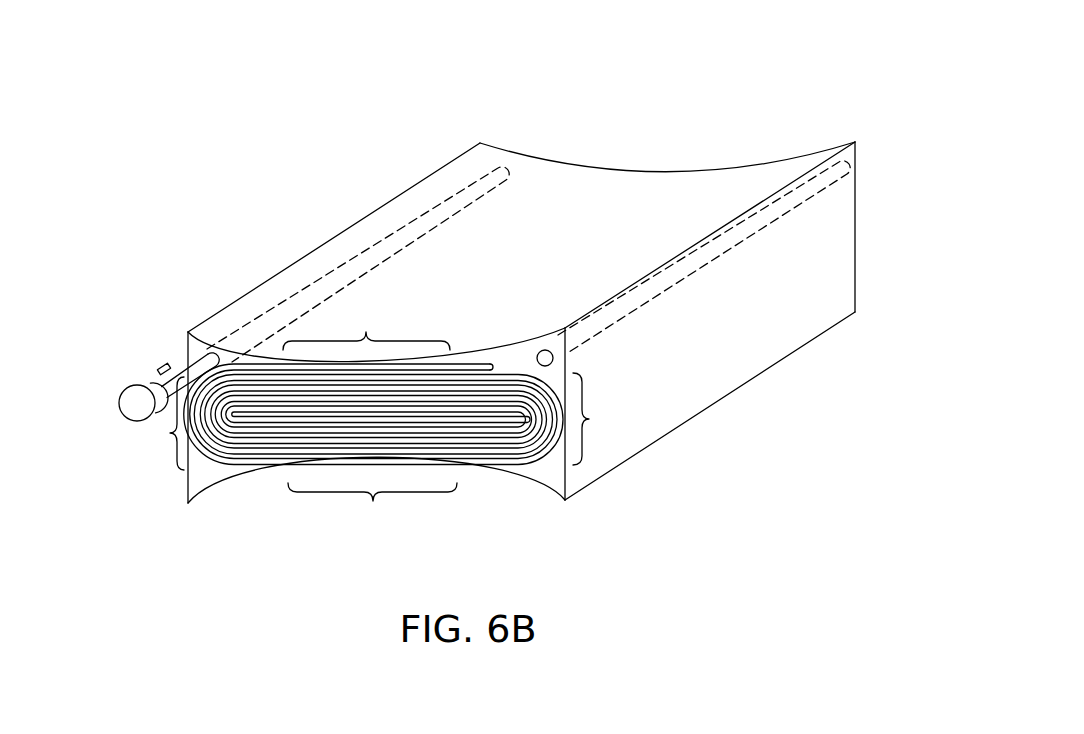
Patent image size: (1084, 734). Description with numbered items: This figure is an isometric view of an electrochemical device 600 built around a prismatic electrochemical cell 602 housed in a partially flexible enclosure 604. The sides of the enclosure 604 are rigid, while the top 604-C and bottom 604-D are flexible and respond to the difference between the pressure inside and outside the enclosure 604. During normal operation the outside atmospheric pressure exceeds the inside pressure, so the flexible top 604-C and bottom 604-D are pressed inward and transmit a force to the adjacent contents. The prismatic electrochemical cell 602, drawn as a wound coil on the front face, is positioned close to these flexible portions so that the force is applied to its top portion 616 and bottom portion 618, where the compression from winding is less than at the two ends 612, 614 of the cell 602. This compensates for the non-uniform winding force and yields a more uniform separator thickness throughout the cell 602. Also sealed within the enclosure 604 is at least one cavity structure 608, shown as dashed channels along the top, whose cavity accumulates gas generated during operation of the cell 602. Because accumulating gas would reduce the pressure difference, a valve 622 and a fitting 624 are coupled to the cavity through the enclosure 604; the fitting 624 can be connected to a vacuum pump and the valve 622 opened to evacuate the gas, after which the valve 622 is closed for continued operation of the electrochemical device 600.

The electrochemical device 600 is at (765, 85).
The prismatic electrochemical cell 602 is at (259, 474).
The enclosure 604 is at (857, 250).
The top of enclosure 604-C is at (651, 172).
The bottom of enclosure 604-D is at (517, 474).
The cavity structure 608 is at (415, 216).
The end of prismatic electrochemical cell 612 is at (604, 419).
The end of prismatic electrochemical cell 614 is at (155, 423).
The top portion of prismatic electrochemical cell 616 is at (366, 330).
The bottom portion of prismatic electrochemical cell 618 is at (372, 508).
The valve 622 is at (199, 350).
The fitting 624 is at (144, 385).